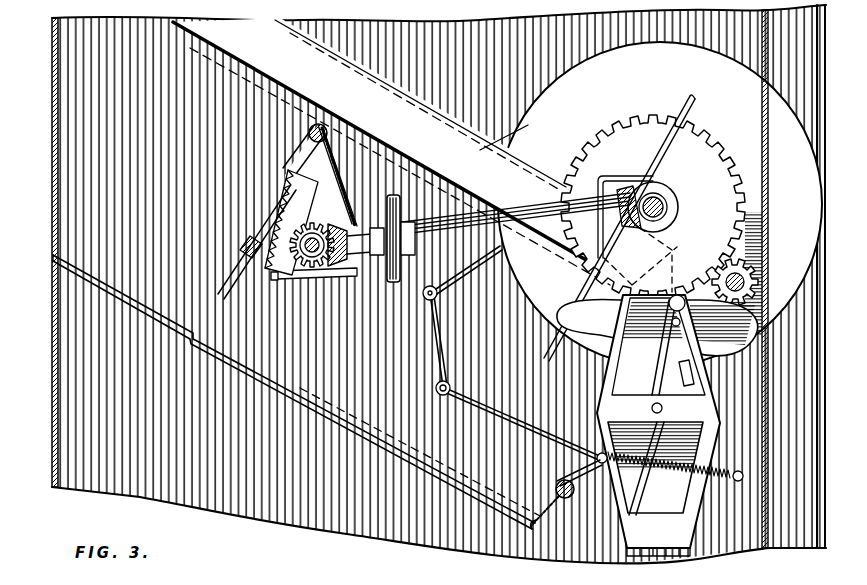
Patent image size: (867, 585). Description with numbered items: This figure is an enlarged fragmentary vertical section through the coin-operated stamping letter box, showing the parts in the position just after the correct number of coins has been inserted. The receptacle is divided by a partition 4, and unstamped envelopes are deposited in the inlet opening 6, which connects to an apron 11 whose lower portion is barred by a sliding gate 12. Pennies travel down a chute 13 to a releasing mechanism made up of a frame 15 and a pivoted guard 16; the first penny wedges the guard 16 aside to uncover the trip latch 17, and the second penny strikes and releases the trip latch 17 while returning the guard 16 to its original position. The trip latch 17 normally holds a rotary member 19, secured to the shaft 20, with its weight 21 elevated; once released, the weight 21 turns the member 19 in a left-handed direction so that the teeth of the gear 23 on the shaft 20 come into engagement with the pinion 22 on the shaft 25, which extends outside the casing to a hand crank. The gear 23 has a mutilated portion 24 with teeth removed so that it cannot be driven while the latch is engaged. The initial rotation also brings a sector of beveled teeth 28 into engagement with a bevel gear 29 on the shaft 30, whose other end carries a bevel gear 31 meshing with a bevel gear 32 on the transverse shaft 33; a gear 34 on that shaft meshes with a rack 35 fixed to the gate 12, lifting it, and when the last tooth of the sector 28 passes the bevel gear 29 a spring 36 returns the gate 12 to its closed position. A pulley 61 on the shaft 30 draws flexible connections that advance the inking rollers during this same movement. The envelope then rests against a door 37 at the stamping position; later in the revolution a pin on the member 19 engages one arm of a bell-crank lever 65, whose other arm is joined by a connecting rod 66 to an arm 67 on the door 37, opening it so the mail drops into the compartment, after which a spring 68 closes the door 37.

The partition 4 is at (766, 548).
The inlet opening 6 is at (57, 233).
The apron 11 is at (446, 478).
The gate 12 is at (265, 233).
The chute 13 is at (512, 170).
The frame 15 is at (658, 425).
The guard 16 is at (662, 376).
The trip latch 17 is at (690, 364).
The rotary member 19 is at (515, 138).
The shaft 20 is at (668, 207).
The weight 21 is at (566, 320).
The pinion 22 is at (758, 274).
The gear 23 is at (640, 128).
The mutilated portion 24 is at (712, 148).
The shaft 25 is at (748, 268).
The sector of beveled teeth 28 is at (640, 235).
The bevel gear 29 is at (626, 190).
The shaft 30 is at (527, 215).
The bevel gear 31 is at (342, 216).
The bevel gear 32 is at (312, 270).
The transverse shaft 33 is at (336, 270).
The gear 34 is at (280, 281).
The rack 35 is at (312, 225).
The spring 36 is at (298, 178).
The door 37 is at (538, 533).
The pulley 61 is at (395, 196).
The bell-crank lever 65 is at (494, 251).
The connecting rod 66 is at (520, 424).
The arm 67 is at (587, 556).
The spring 68 is at (735, 481).